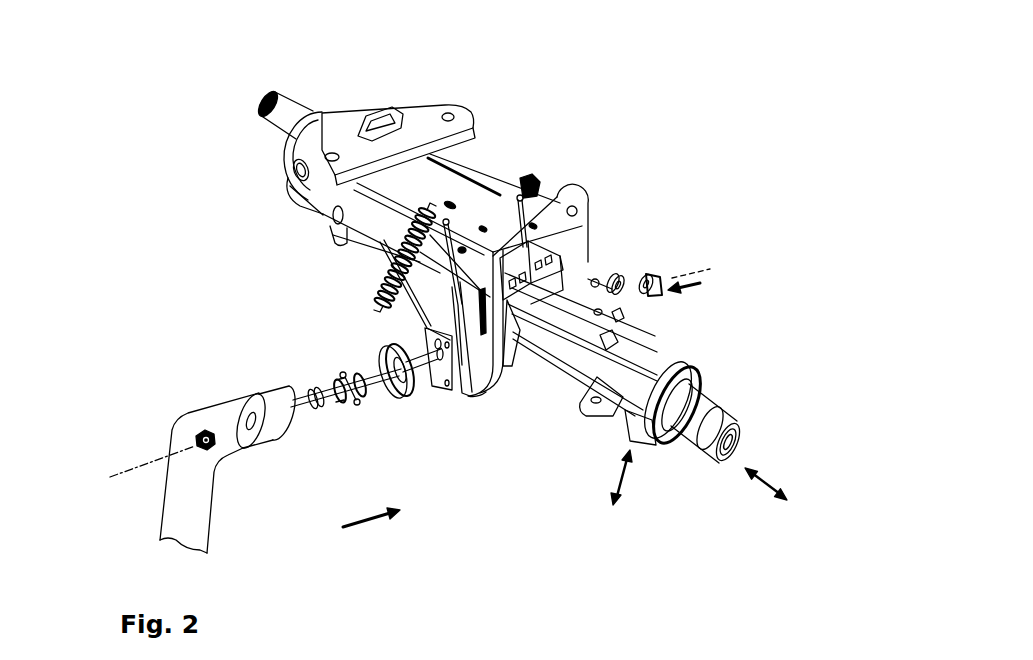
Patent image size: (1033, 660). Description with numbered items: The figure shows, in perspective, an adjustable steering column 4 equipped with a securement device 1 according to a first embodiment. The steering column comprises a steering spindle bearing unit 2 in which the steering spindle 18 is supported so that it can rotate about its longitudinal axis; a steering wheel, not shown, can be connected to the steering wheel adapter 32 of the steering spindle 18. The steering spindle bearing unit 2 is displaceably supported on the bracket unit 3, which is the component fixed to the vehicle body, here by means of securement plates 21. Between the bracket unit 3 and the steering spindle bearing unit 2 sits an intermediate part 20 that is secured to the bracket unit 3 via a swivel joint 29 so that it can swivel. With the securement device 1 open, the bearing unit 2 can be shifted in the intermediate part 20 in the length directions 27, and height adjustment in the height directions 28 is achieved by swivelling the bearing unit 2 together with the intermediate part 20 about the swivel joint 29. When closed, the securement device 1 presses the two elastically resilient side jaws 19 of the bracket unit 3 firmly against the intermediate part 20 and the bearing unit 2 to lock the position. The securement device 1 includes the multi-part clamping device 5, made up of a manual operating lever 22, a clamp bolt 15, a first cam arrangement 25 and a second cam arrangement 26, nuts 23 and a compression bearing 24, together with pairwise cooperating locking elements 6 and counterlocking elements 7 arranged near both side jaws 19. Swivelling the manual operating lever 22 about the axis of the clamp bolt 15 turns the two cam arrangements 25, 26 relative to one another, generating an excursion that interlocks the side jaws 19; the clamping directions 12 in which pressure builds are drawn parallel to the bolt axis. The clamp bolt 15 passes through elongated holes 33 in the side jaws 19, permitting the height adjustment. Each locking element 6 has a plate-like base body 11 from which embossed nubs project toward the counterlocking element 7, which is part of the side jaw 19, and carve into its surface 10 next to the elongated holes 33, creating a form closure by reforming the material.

The securement device 1 is at (315, 445).
The steering spindle bearing unit 2 is at (645, 350).
The bracket unit 3 is at (360, 217).
The adjustable steering column 4 is at (665, 212).
The clamping device 5 is at (365, 412).
The locking element 6 is at (595, 280).
The counterlocking element 7 is at (468, 338).
The surface 10 is at (477, 302).
The plate-like base body 11 is at (423, 335).
The clamping direction 12 is at (703, 283).
The clamp bolt 15 is at (295, 397).
The steering spindle 18 is at (700, 407).
The side jaws 19 is at (493, 363).
The intermediate part 20 is at (530, 350).
The securement plates 21 is at (333, 153).
The manual operating lever 22 is at (175, 480).
The nuts 23 is at (652, 275).
The compression bearing 24 is at (618, 280).
The first cam arrangement 25 is at (350, 410).
The second cam arrangement 26 is at (408, 400).
The length directions 27 is at (762, 483).
The height directions 28 is at (625, 473).
The swivel joint 29 is at (290, 153).
The steering wheel adapter 32 is at (742, 425).
The elongated holes 33 is at (483, 390).